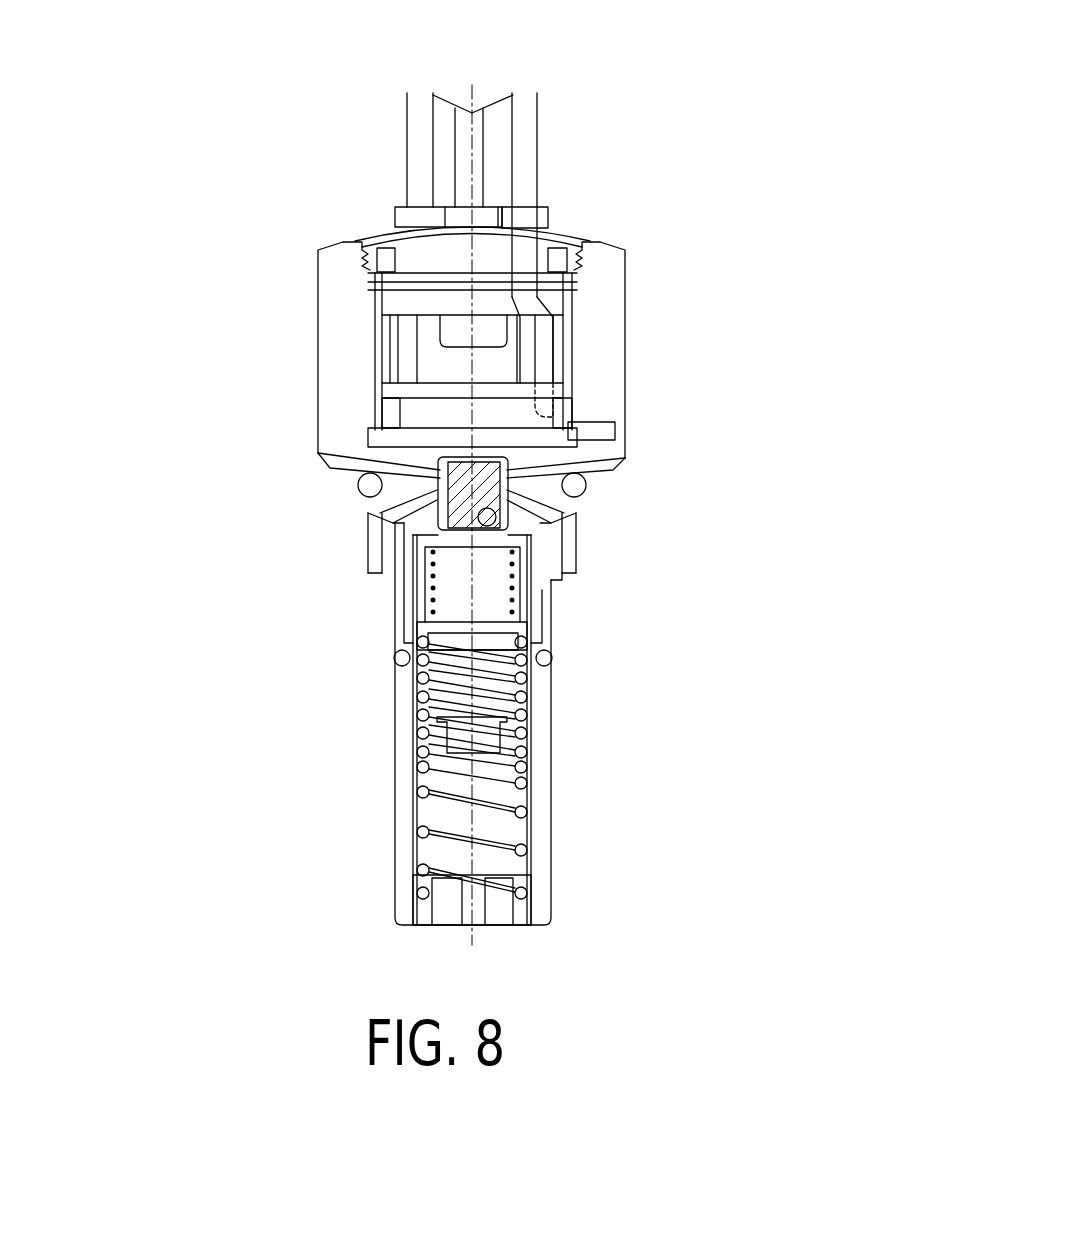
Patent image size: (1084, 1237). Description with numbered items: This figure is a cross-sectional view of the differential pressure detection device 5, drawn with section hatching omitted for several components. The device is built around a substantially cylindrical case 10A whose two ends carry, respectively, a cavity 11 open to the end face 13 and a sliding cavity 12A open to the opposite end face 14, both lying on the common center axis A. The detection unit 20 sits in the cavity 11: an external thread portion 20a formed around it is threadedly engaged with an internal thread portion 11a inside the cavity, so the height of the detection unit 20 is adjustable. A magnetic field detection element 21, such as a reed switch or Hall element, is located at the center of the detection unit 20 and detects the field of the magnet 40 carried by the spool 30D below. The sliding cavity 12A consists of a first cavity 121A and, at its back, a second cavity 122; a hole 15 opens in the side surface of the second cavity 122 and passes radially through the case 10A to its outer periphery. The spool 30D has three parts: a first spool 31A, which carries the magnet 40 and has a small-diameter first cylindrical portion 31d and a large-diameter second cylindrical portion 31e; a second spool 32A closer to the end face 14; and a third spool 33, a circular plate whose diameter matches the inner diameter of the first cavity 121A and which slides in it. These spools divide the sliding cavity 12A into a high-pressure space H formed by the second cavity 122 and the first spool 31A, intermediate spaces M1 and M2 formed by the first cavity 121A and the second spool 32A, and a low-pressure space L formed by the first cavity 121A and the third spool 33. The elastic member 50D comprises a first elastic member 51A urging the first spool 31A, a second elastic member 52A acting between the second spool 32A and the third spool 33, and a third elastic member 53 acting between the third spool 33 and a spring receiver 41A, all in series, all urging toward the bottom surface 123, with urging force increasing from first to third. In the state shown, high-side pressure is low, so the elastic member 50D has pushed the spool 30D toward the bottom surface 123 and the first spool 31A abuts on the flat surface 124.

The differential pressure detection device 5 is at (701, 34).
The center axis A is at (480, 92).
The detection unit 20 is at (542, 158).
The end face 13 is at (553, 239).
The case 10A is at (627, 357).
The internal thread portion 11a is at (390, 268).
The cavity 11 is at (372, 432).
The external thread portion 20a is at (380, 330).
The magnetic field detection element 21 is at (420, 380).
The space in high pressure side H is at (332, 447).
The bottom surface 123 is at (627, 458).
The magnet 40 is at (440, 476).
The flat surface 124 is at (586, 485).
The hole 15 is at (368, 513).
The second cavity 122 is at (556, 498).
The sliding cavity 12A is at (727, 558).
The first cylindrical portion 31d is at (423, 535).
The second cylindrical portion 31e is at (416, 563).
The first spool 31A is at (230, 593).
The spool 30D is at (150, 665).
The first cavity 121A is at (518, 600).
The intermediate space M1 is at (460, 588).
The second spool 32A is at (440, 632).
The intermediate space M2 is at (440, 682).
The second elastic member 52A is at (525, 706).
The first elastic member 51A is at (519, 604).
The third elastic member 53 is at (537, 800).
The elastic member 50D is at (725, 692).
The third spool 33 is at (455, 752).
The space in low pressure side L is at (440, 812).
The spring receiver 41A is at (423, 913).
The end face 14 is at (532, 730).